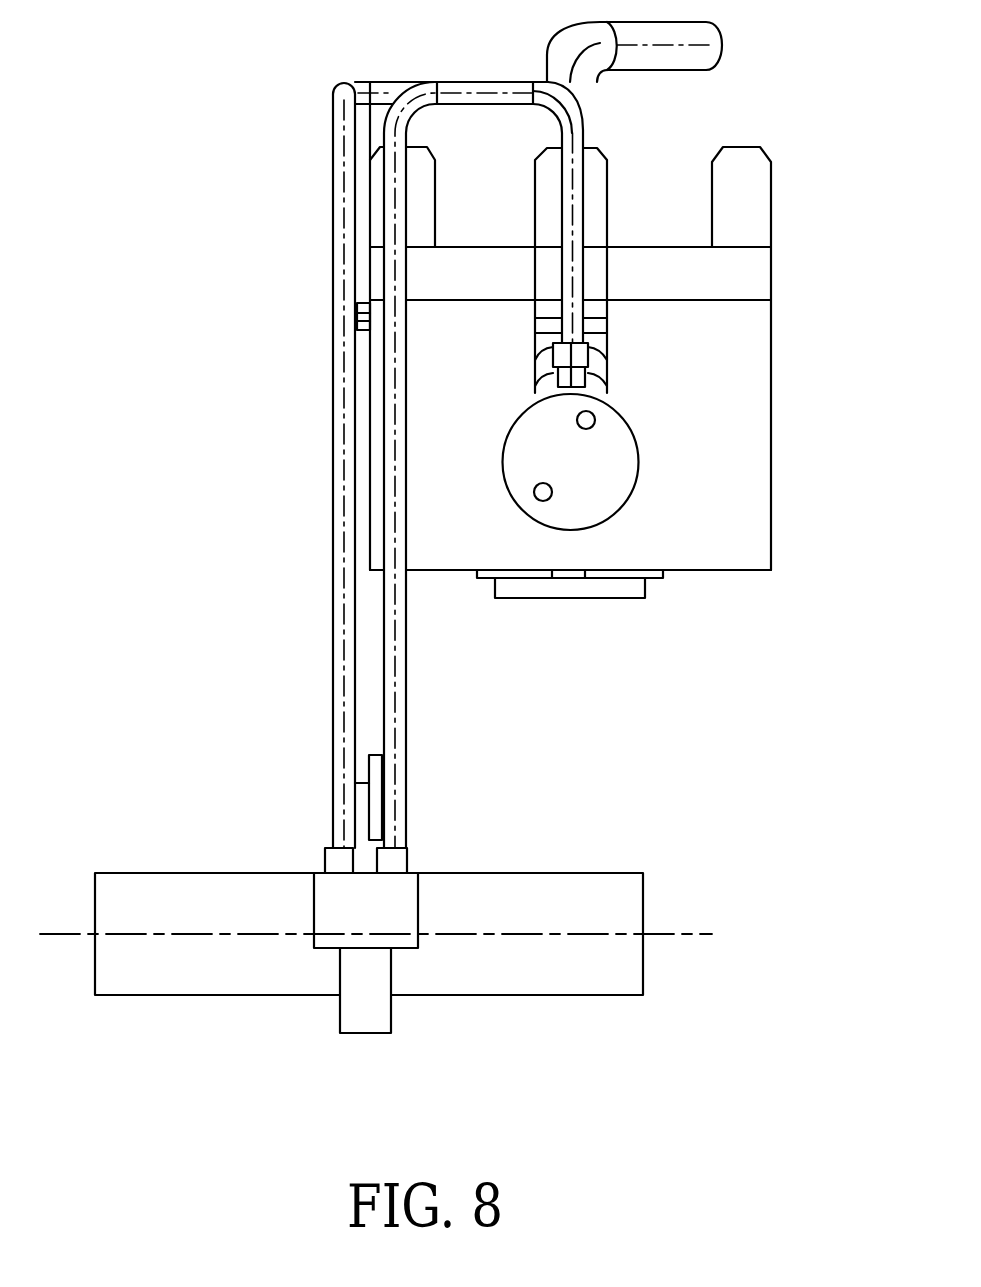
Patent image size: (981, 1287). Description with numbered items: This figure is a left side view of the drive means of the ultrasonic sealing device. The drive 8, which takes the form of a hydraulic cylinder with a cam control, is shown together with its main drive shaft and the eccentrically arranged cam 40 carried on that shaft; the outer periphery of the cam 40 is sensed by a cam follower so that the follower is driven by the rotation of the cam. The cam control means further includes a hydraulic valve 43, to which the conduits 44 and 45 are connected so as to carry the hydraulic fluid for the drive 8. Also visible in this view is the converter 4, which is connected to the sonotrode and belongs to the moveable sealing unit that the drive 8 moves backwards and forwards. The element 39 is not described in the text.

The converter 4 is at (575, 592).
The drive 8 is at (603, 457).
The support rail 39 is at (490, 913).
The cam 40 is at (362, 828).
The hydraulic valve 43 is at (378, 913).
The conduit 44 is at (343, 448).
The conduit 45 is at (392, 351).